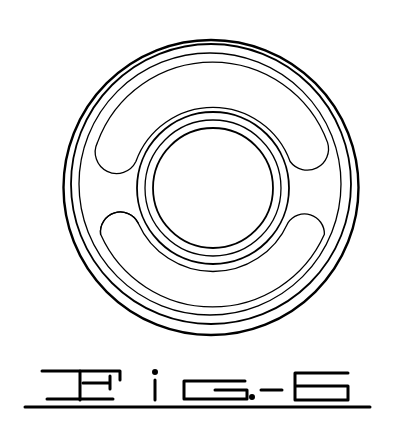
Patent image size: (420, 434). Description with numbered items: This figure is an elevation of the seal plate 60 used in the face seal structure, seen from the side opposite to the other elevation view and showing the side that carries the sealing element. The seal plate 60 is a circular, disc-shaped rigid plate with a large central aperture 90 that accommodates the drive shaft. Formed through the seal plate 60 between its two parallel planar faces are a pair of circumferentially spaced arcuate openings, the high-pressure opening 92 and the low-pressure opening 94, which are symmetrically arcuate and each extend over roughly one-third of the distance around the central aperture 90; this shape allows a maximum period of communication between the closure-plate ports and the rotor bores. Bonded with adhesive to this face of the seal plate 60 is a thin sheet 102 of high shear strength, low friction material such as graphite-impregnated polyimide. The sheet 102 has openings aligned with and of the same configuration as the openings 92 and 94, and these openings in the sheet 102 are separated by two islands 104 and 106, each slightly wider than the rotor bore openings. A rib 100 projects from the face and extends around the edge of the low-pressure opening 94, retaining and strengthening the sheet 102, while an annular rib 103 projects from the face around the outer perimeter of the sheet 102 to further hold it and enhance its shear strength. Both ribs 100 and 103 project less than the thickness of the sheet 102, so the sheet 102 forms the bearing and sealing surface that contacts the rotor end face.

The seal plate 60 is at (271, 49).
The central aperture 90 is at (227, 191).
The arcuate high-pressure opening 92 is at (229, 89).
The arcuate low-pressure opening 94 is at (226, 304).
The rib 100 is at (242, 270).
The sheet 102 is at (100, 212).
The annular rib 103 is at (117, 82).
The island 104 is at (330, 203).
The island 106 is at (93, 200).